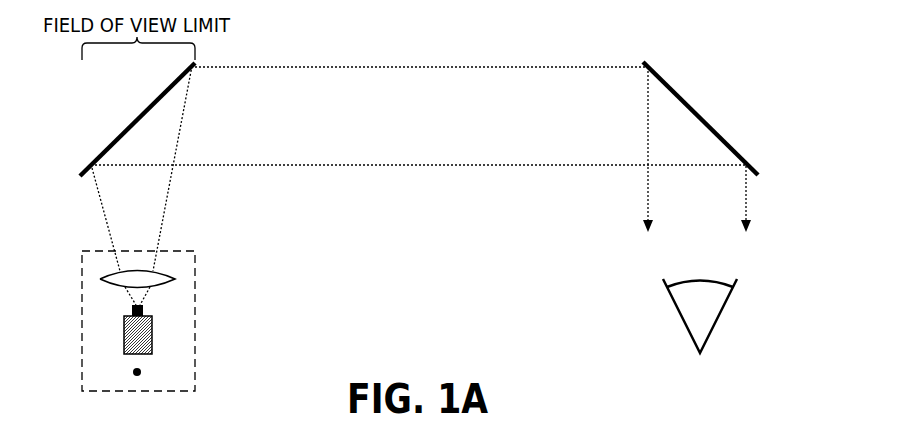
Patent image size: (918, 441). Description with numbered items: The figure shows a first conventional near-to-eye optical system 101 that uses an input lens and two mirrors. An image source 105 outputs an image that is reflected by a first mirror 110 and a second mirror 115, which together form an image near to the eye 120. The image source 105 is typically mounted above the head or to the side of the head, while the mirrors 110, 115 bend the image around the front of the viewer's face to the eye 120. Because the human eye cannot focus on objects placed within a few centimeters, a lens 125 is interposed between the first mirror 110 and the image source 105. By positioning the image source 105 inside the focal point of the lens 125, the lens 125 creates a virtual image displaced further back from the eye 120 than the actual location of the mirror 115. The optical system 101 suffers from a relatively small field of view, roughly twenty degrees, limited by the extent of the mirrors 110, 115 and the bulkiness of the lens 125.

The near-to-eye optical system 101 is at (427, 230).
The image source 105 is at (124, 335).
The first mirror 110 is at (100, 151).
The second mirror 115 is at (712, 128).
The eye 120 is at (717, 322).
The lens 125 is at (105, 278).